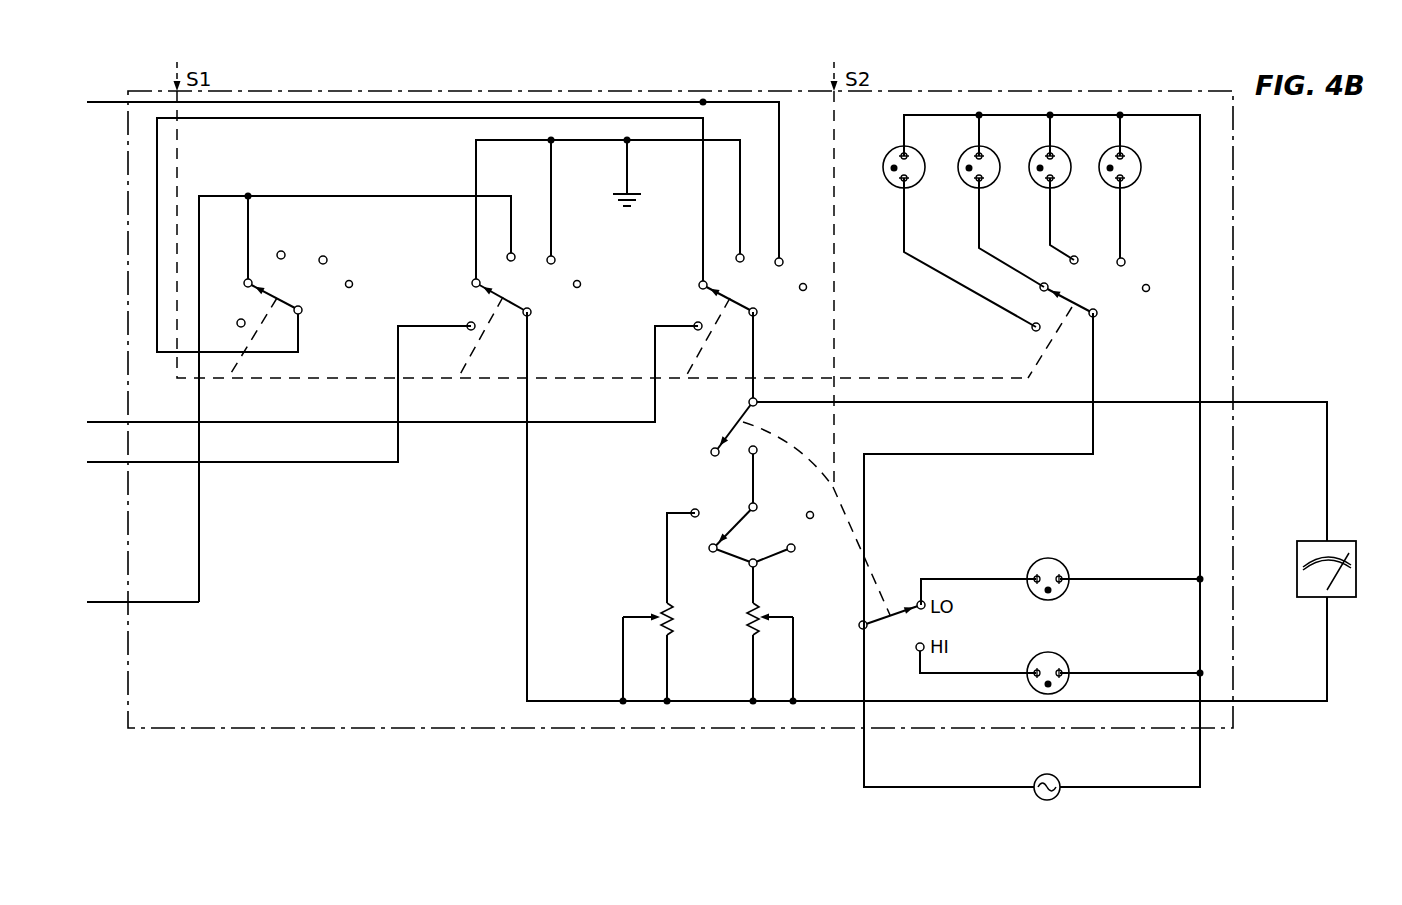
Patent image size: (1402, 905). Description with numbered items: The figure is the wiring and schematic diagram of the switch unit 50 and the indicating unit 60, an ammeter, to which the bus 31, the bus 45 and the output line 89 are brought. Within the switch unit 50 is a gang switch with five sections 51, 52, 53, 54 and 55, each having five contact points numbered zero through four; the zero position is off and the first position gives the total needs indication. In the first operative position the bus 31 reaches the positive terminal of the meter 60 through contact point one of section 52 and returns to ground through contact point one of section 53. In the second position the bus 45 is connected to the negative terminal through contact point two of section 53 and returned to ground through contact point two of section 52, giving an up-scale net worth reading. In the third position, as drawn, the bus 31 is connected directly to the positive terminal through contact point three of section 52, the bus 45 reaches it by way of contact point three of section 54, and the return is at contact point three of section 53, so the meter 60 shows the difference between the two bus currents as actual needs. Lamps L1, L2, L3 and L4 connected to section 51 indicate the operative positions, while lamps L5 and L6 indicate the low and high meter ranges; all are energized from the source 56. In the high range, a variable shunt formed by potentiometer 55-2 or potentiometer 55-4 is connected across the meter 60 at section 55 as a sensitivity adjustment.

The bus 31 is at (105, 101).
The bus 45 is at (101, 602).
The switch unit 50 is at (177, 729).
The section 51 is at (1133, 329).
The section 52 is at (793, 326).
The section 53 is at (567, 326).
The section 54 is at (343, 326).
The section 55 is at (735, 504).
The potentiometer 55-4 is at (662, 608).
The potentiometer 55-2 is at (761, 608).
The source 56 is at (1050, 774).
The indicating unit 60 is at (1357, 571).
The output line 89 is at (99, 414).
The lamp L1 is at (1126, 158).
The lamp L2 is at (1055, 158).
The lamp L3 is at (984, 158).
The lamp L4 is at (908, 158).
The lamp L5 is at (1048, 567).
The lamp L6 is at (1048, 662).